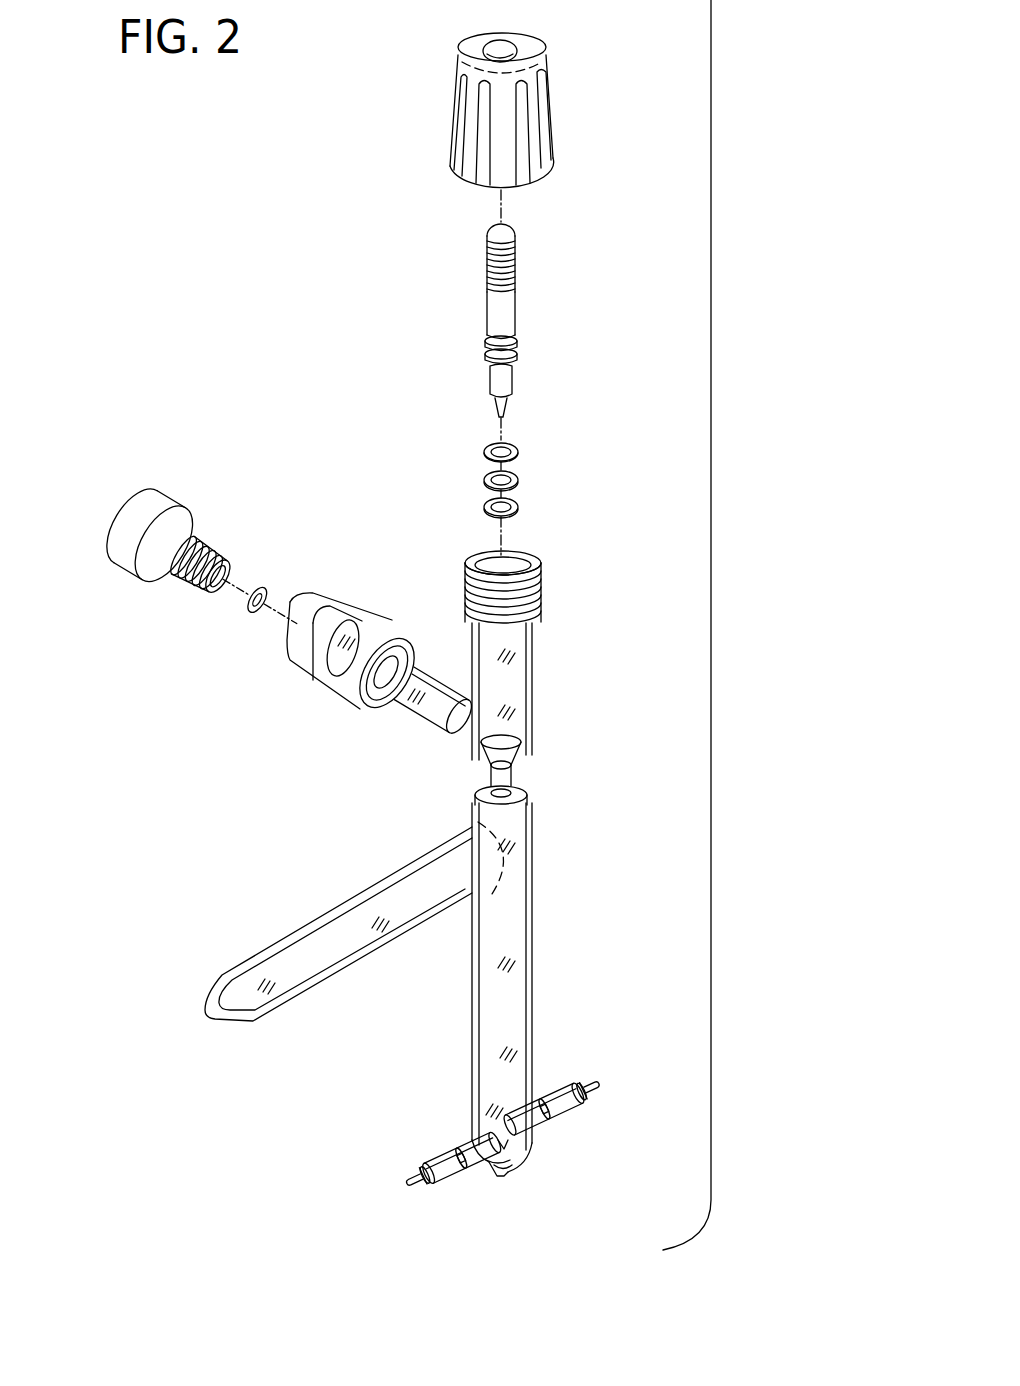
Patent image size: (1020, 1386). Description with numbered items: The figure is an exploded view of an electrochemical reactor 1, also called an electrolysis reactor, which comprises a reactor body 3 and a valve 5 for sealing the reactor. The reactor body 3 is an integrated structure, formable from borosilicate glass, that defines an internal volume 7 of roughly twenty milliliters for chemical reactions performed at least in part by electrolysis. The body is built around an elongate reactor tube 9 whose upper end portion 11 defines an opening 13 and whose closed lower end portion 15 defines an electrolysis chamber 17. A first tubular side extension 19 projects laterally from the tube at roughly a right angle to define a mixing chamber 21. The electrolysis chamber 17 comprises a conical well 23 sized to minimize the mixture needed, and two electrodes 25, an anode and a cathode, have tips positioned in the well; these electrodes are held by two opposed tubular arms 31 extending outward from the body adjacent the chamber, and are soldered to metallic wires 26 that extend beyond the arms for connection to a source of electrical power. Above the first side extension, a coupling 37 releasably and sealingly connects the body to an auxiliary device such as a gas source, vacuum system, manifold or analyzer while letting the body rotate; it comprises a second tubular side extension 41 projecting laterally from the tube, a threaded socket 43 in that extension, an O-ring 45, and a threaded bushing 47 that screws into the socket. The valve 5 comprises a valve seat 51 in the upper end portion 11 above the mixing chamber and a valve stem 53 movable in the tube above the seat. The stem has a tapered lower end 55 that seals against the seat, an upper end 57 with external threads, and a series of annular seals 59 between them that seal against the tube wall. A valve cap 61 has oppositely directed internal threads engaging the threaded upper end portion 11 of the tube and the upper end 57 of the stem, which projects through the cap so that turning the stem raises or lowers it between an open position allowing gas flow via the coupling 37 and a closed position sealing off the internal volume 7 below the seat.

The electrochemical reactor 1 is at (762, 567).
The reactor body 3 is at (513, 851).
The valve 5 is at (368, 258).
The internal volume 7 is at (497, 920).
The elongate reactor tube 9 is at (532, 1012).
The upper end portion 11 is at (527, 539).
The opening 13 is at (492, 566).
The closed lower end portion 15 is at (490, 1168).
The electrolysis chamber 17 is at (507, 1105).
The first tubular side extension 19 is at (335, 938).
The mixing chamber 21 is at (292, 955).
The well 23 is at (515, 1168).
The electrodes 25 is at (495, 1140).
The metallic wires 26 is at (409, 1190).
The tubular arms 31 is at (438, 1162).
The coupling 37 is at (242, 724).
The second tubular side extension 41 is at (410, 712).
The threaded socket 43 is at (355, 612).
The O-ring 45 is at (284, 588).
The threaded bushing 47 is at (125, 580).
The valve seat 51 is at (518, 745).
The valve stem 53 is at (505, 315).
The lower end 55 is at (505, 408).
The upper end 57 is at (512, 226).
The annular seals 59 is at (518, 507).
The valve cap 61 is at (452, 122).